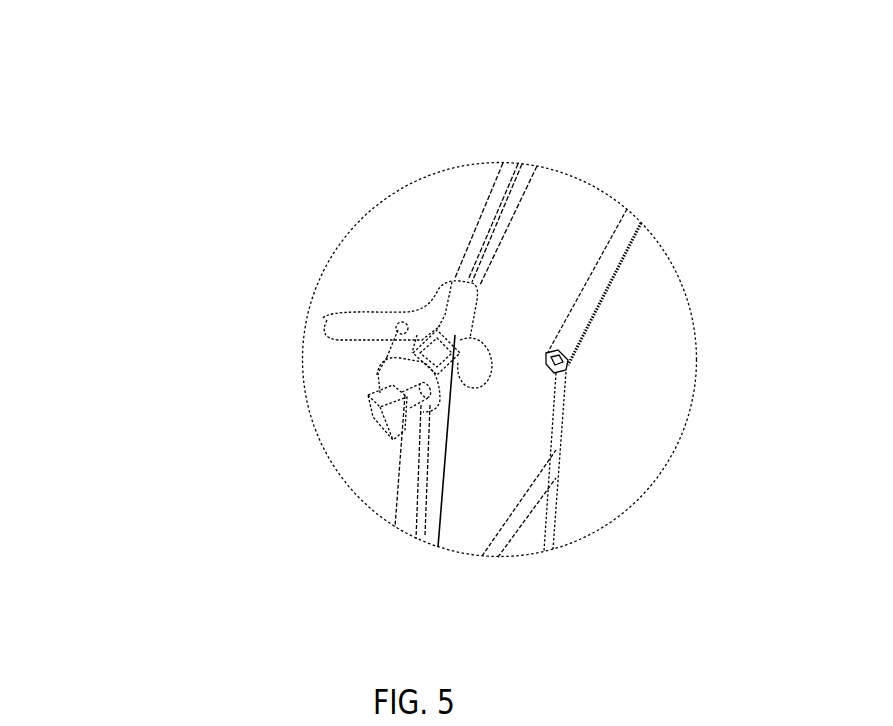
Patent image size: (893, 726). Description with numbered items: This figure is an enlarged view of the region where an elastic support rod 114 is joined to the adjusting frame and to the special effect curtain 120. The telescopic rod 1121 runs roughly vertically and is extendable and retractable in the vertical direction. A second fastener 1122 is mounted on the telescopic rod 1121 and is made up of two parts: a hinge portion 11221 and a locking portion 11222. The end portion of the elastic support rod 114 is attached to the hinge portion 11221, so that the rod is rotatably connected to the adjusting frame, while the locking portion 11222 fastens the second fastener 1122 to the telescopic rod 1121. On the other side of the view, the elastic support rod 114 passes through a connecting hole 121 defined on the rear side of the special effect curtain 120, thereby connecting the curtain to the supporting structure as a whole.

The elastic support rod 114 is at (488, 212).
The second fastener 1122 is at (150, 264).
The hinge portion 11221 is at (427, 313).
The locking portion 11222 is at (378, 420).
The telescopic rod 1121 is at (410, 483).
The special effect curtain 120 is at (655, 397).
The connecting hole 121 is at (540, 425).